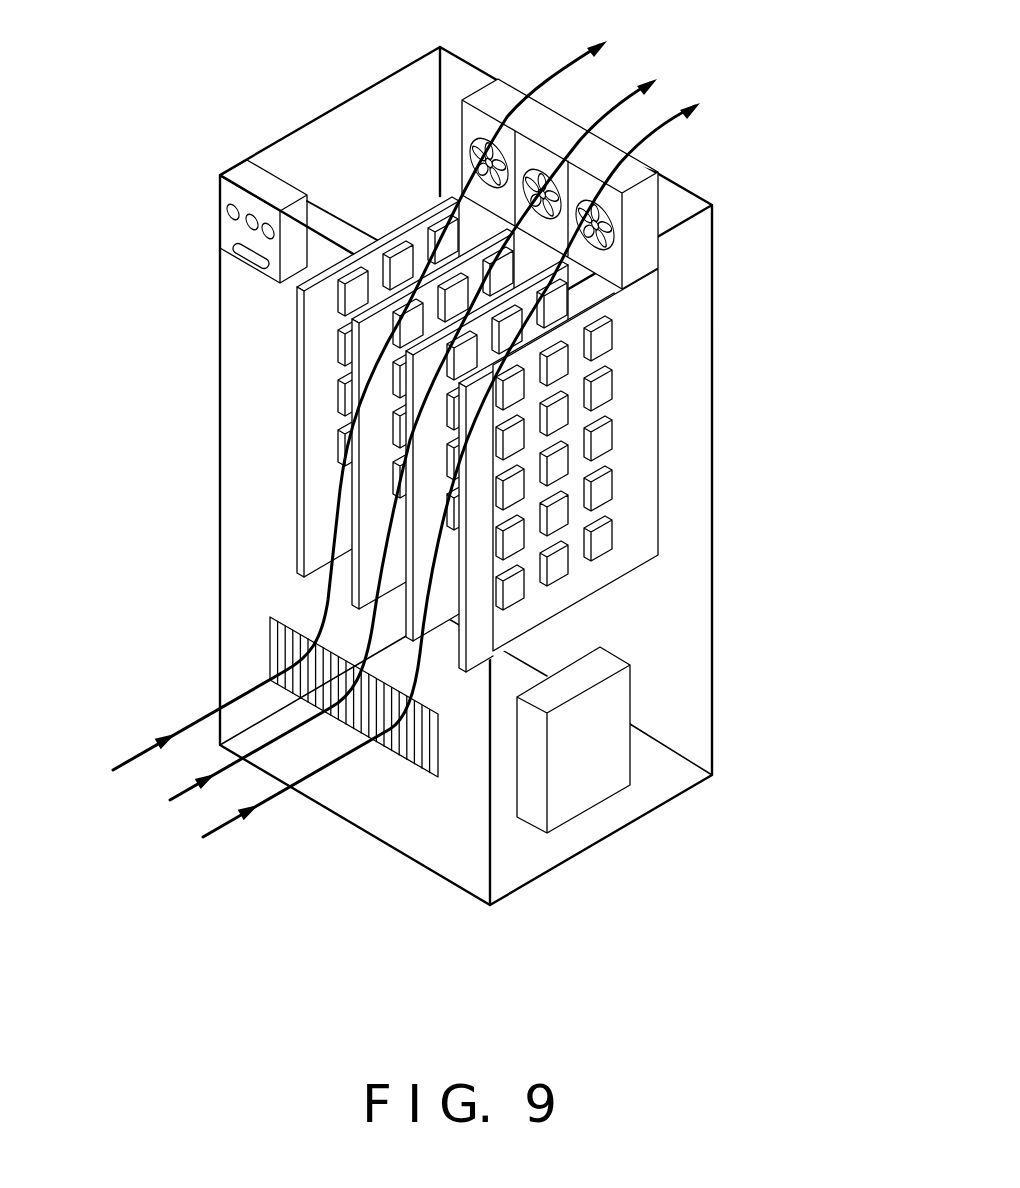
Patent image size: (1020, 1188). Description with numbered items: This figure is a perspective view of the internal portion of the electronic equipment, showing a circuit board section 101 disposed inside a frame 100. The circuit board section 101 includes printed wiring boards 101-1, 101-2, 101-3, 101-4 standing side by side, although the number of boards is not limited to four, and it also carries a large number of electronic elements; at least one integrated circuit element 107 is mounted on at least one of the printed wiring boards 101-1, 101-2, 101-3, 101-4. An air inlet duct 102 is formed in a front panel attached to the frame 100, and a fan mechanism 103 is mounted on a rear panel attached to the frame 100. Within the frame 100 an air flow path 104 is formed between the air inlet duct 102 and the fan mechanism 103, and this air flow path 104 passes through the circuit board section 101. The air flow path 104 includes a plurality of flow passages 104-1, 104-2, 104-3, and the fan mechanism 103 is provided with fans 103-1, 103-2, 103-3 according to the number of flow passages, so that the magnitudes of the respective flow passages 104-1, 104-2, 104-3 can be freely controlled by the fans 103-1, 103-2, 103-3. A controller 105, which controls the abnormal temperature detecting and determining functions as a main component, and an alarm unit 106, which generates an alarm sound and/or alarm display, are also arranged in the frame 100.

The frame 100 is at (713, 550).
The circuit board section 101 is at (339, 435).
The printed wiring board 101-1 is at (297, 474).
The printed wiring board 101-2 is at (352, 524).
The printed wiring board 101-3 is at (406, 566).
The printed wiring board 101-4 is at (459, 606).
The air inlet duct 102 is at (397, 762).
The fan mechanism 103 is at (621, 151).
The fan 103-1 is at (486, 93).
The fan 103-2 is at (625, 135).
The fan 103-3 is at (640, 208).
The air flow path 104 is at (372, 499).
The flow passage 104-1 is at (113, 769).
The flow passage 104-2 is at (172, 799).
The flow passage 104-3 is at (451, 501).
The controller 105 is at (600, 782).
The alarm unit 106 is at (228, 225).
The integrated circuit element 107 is at (607, 340).